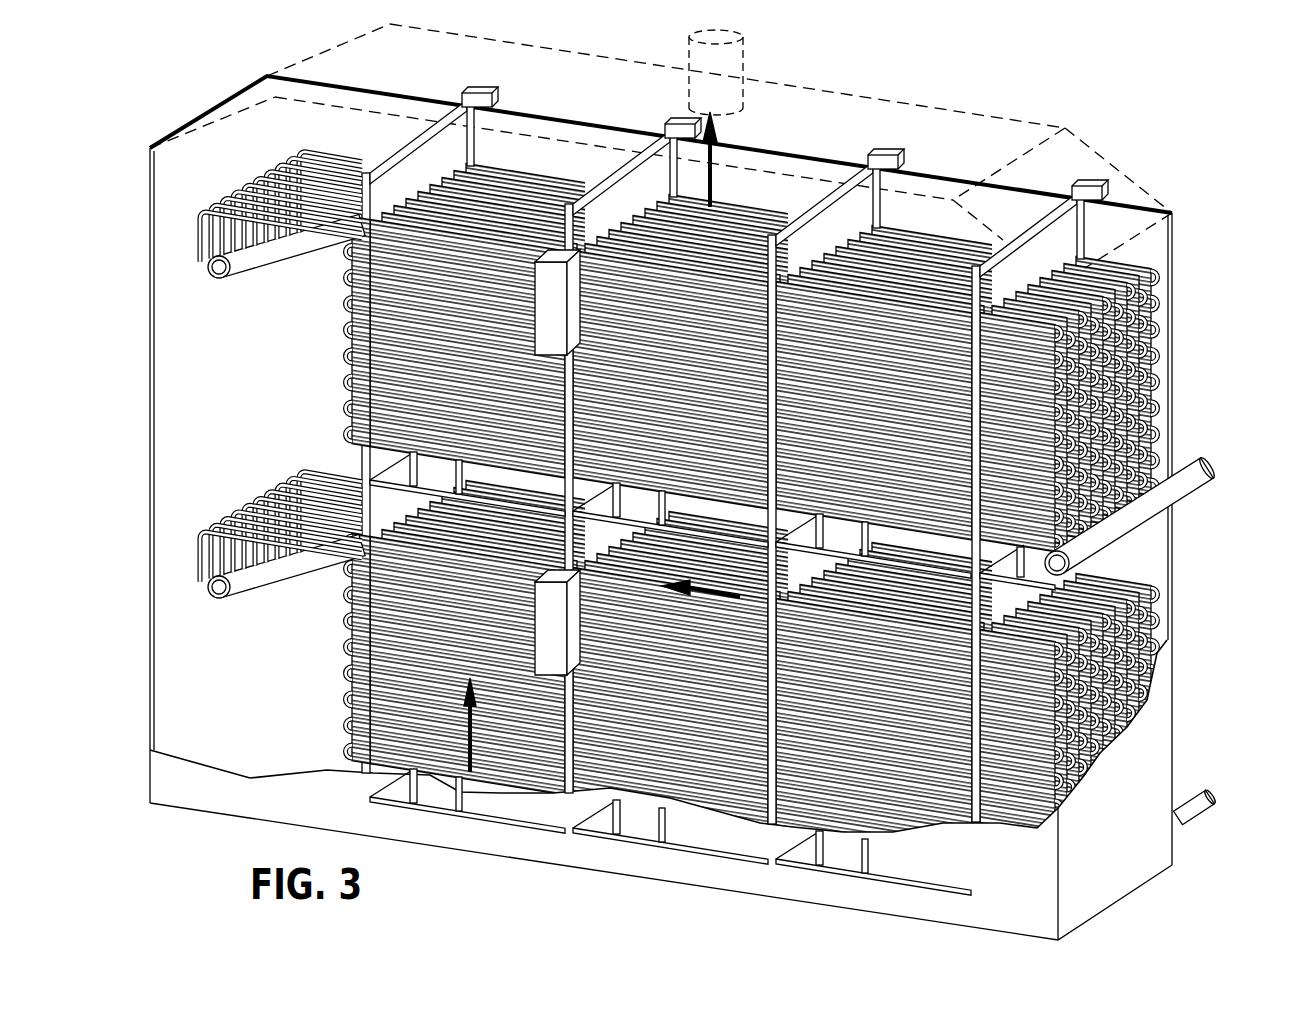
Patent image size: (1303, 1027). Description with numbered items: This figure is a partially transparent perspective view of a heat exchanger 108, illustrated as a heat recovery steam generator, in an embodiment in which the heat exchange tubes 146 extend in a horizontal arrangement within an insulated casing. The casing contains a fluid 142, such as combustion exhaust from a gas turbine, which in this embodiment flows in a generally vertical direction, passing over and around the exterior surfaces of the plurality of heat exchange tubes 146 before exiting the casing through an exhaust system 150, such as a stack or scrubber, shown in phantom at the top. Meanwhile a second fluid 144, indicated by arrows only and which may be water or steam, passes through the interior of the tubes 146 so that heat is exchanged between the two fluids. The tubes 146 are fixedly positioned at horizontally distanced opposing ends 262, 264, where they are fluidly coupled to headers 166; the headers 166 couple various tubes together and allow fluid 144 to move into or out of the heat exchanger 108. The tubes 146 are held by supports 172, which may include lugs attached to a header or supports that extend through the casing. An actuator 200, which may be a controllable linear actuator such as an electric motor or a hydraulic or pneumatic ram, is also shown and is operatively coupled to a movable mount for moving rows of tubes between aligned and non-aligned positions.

The heat exchanger 108 is at (829, 148).
The fluid 142 is at (712, 182).
The fluid 144 is at (708, 608).
The heat exchange tubes 146 is at (690, 488).
The exhaust system 150 is at (753, 62).
The header 166 is at (707, 465).
The support 172 is at (492, 98).
The actuator 200 is at (535, 302).
The opposing end 262 is at (1142, 283).
The opposing end 264 is at (333, 268).